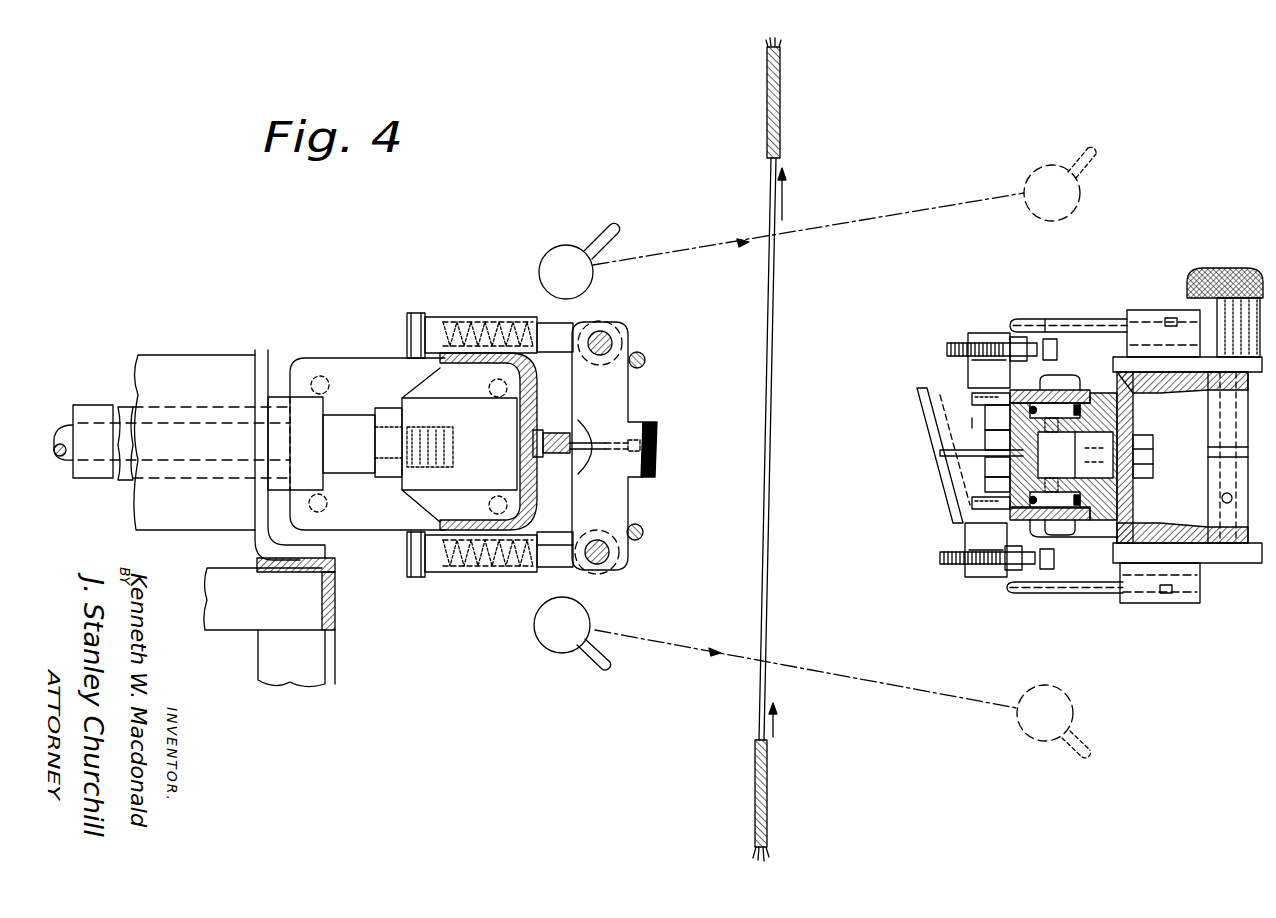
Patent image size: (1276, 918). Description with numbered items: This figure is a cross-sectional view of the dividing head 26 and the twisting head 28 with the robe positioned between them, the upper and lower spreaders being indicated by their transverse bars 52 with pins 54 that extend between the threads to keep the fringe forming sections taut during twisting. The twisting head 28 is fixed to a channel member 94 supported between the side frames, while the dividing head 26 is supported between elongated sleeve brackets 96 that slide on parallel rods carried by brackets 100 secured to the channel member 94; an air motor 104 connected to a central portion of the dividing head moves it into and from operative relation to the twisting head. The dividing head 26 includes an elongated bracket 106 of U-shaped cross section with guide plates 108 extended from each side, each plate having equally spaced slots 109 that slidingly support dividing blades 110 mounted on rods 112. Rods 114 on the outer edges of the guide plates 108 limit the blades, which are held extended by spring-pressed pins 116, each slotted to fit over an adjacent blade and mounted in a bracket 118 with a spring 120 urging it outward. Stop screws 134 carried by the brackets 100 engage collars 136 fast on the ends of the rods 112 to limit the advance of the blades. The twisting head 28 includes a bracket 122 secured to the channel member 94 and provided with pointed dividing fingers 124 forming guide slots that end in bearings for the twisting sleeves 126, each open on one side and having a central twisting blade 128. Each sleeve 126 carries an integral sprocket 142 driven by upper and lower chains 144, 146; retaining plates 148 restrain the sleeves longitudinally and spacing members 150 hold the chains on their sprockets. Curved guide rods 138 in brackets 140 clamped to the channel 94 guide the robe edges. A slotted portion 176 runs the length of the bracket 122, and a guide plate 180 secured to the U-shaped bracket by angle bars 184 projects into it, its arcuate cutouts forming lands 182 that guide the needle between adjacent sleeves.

The dividing head 26 is at (422, 282).
The twisting head 28 is at (923, 300).
The transverse bar 52 is at (565, 246).
The pins 54 is at (615, 229).
The channel member 94 is at (1160, 385).
The sleeve brackets 96 is at (98, 405).
The brackets 100 is at (965, 570).
The air motor 104 is at (197, 355).
The elongated bracket 106 is at (530, 386).
The guide plates 108 is at (553, 348).
The slots 109 is at (547, 566).
The dividing blades 110 is at (660, 434).
The rods 112 is at (614, 341).
The rods 114 is at (646, 358).
The spring-pressed pins 116 is at (553, 330).
The bracket 118 is at (450, 318).
The spring 120 is at (462, 320).
The bracket 122 is at (1115, 412).
The dividing fingers 124 is at (930, 410).
The twisting sleeve 126 is at (968, 424).
The twisting blade 128 is at (990, 470).
The stop screws 134 is at (952, 343).
The collars 136 is at (614, 335).
The curved guide rods 138 is at (1060, 319).
The brackets 140 is at (1140, 310).
The sprocket 142 is at (975, 400).
The upper chain 144 is at (1003, 388).
The lower chain 146 is at (1045, 531).
The retaining plates 148 is at (1037, 388).
The spacing members 150 is at (1050, 392).
The slotted portion 176 is at (937, 453).
The guide plate 180 is at (586, 450).
The lands 182 is at (650, 455).
The angle bars 184 is at (541, 436).